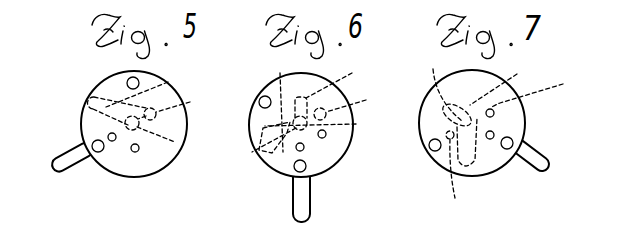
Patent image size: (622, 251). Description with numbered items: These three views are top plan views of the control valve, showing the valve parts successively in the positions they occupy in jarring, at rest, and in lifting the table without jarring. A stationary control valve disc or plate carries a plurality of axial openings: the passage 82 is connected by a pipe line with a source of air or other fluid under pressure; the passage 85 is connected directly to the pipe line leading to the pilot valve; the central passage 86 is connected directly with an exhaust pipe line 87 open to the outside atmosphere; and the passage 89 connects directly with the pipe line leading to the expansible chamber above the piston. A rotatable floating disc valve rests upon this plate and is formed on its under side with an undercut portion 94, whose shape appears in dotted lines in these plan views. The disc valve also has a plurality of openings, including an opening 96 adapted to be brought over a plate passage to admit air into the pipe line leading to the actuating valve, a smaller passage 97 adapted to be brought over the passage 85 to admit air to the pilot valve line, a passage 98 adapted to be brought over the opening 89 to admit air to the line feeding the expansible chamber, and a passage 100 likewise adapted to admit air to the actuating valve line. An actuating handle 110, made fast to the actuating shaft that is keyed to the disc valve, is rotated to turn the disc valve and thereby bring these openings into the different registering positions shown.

In FIG. 6, the passage 82 is at (261, 149).
In FIG. 6, the passage 85 is at (267, 104).
In FIG. 7, the passage 85 is at (461, 169).
In FIG. 5, the central passage 86 is at (141, 138).
In FIG. 6, the central passage 86 is at (325, 122).
In FIG. 7, the central passage 86 is at (438, 87).
In FIG. 7, the exhaust pipe line 87 is at (541, 89).
In FIG. 5, the passage 89 is at (185, 100).
In FIG. 6, the passage 89 is at (355, 101).
In FIG. 5, the undercut portion 94 is at (151, 83).
In FIG. 6, the undercut portion 94 is at (335, 87).
In FIG. 7, the undercut portion 94 is at (490, 93).
In FIG. 5, the opening 96 is at (92, 145).
In FIG. 6, the opening 96 is at (296, 171).
In FIG. 7, the opening 96 is at (505, 149).
In FIG. 5, the smaller passage 97 is at (109, 134).
In FIG. 6, the smaller passage 97 is at (304, 150).
In FIG. 7, the smaller passage 97 is at (494, 135).
In FIG. 5, the passage 98 is at (135, 152).
In FIG. 6, the passage 98 is at (326, 136).
In FIG. 7, the passage 98 is at (494, 113).
In FIG. 5, the passage 100 is at (128, 79).
In FIG. 6, the passage 100 is at (261, 107).
In FIG. 7, the passage 100 is at (431, 150).
In FIG. 5, the actuating handle 110 is at (62, 177).
In FIG. 6, the actuating handle 110 is at (296, 214).
In FIG. 7, the actuating handle 110 is at (538, 173).